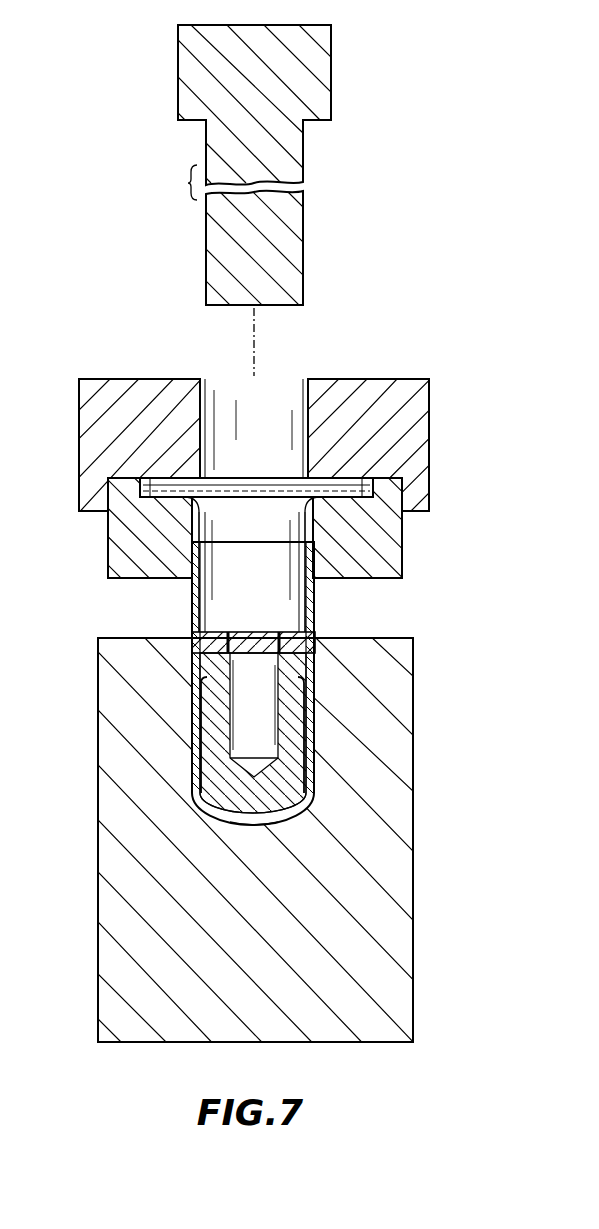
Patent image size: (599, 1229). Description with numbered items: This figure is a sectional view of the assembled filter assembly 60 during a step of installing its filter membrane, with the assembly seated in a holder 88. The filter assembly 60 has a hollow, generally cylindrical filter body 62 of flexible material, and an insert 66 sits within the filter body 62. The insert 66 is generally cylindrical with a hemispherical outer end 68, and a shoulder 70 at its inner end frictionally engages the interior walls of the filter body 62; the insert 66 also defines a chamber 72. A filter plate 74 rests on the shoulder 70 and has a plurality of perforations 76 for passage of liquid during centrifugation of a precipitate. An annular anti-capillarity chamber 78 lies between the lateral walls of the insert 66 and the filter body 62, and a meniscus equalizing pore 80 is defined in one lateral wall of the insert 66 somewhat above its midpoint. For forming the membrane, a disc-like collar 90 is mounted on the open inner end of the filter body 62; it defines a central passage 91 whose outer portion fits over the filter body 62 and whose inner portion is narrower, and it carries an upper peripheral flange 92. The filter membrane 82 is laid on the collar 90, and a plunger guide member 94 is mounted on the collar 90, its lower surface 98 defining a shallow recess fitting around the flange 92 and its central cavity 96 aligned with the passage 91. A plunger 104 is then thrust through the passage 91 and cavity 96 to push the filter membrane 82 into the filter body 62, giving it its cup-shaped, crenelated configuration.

The filter assembly 60 is at (90, 650).
The filter body 62 is at (316, 598).
The insert 66 is at (292, 770).
The outer end 68 is at (252, 826).
The shoulder 70 is at (205, 665).
The chamber 72 is at (266, 676).
The filter plate 74 is at (193, 636).
The perforations 76 is at (228, 640).
The anti-capillarity chamber 78 is at (303, 690).
The meniscus equalizing pore 80 is at (300, 698).
The filter membrane 82 is at (232, 492).
The holder 88 is at (413, 816).
The collar 90 is at (393, 538).
The central passage 91 is at (268, 512).
The upper peripheral flange 92 is at (135, 478).
The plunger guide member 94 is at (382, 388).
The central cavity 96 is at (280, 397).
The lower surface 98 is at (88, 514).
The plunger 104 is at (318, 68).